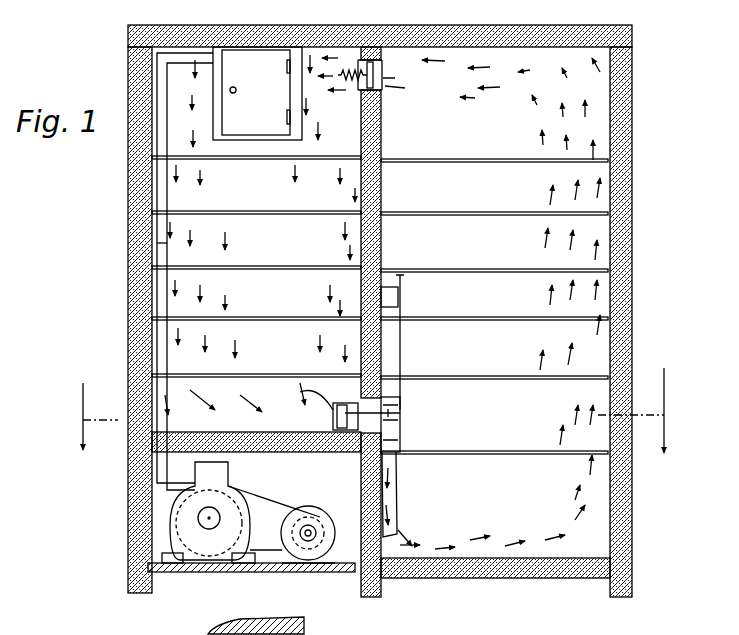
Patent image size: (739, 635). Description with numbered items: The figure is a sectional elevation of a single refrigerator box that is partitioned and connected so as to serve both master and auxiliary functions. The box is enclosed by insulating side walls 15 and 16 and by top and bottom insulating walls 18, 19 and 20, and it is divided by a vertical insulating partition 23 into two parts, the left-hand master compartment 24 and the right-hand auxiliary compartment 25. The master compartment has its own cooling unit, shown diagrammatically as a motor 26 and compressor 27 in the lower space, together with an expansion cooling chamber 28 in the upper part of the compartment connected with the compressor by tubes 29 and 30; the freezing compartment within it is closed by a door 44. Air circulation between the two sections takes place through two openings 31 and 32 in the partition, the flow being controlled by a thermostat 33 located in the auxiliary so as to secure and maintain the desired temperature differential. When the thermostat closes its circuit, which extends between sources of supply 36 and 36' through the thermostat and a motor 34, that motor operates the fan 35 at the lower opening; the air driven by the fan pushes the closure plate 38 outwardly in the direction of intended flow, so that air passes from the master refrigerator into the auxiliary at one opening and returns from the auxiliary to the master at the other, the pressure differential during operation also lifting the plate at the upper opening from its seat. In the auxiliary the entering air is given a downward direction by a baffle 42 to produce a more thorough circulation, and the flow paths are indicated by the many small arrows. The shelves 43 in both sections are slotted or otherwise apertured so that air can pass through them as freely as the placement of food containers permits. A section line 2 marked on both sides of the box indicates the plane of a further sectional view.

The section line 2 is at (371, 410).
The insulating side wall 15 is at (128, 263).
The insulating side wall 16 is at (632, 204).
The top insulating wall 18 is at (523, 30).
The insulating wall 19 is at (289, 453).
The bottom insulating wall 20 is at (530, 576).
The insulating partition 23 is at (382, 140).
The master compartment 24 is at (283, 301).
The auxiliary compartment 25 is at (503, 301).
The motor 26 is at (313, 518).
The compressor 27 is at (229, 488).
The expansion cooling chamber 28 is at (265, 141).
The tube 29 is at (158, 230).
The tube 30 is at (168, 248).
The opening 31 is at (396, 79).
The opening 32 is at (384, 436).
The thermostat 33 is at (398, 297).
The motor 34 is at (333, 411).
The fan 35 is at (400, 407).
The source of supply 36 is at (420, 342).
The source of supply 36' is at (311, 396).
The plate 38 is at (357, 92).
The baffle 42 is at (397, 465).
The shelves 43 is at (493, 178).
The door to the freezing compartment 44 is at (266, 88).